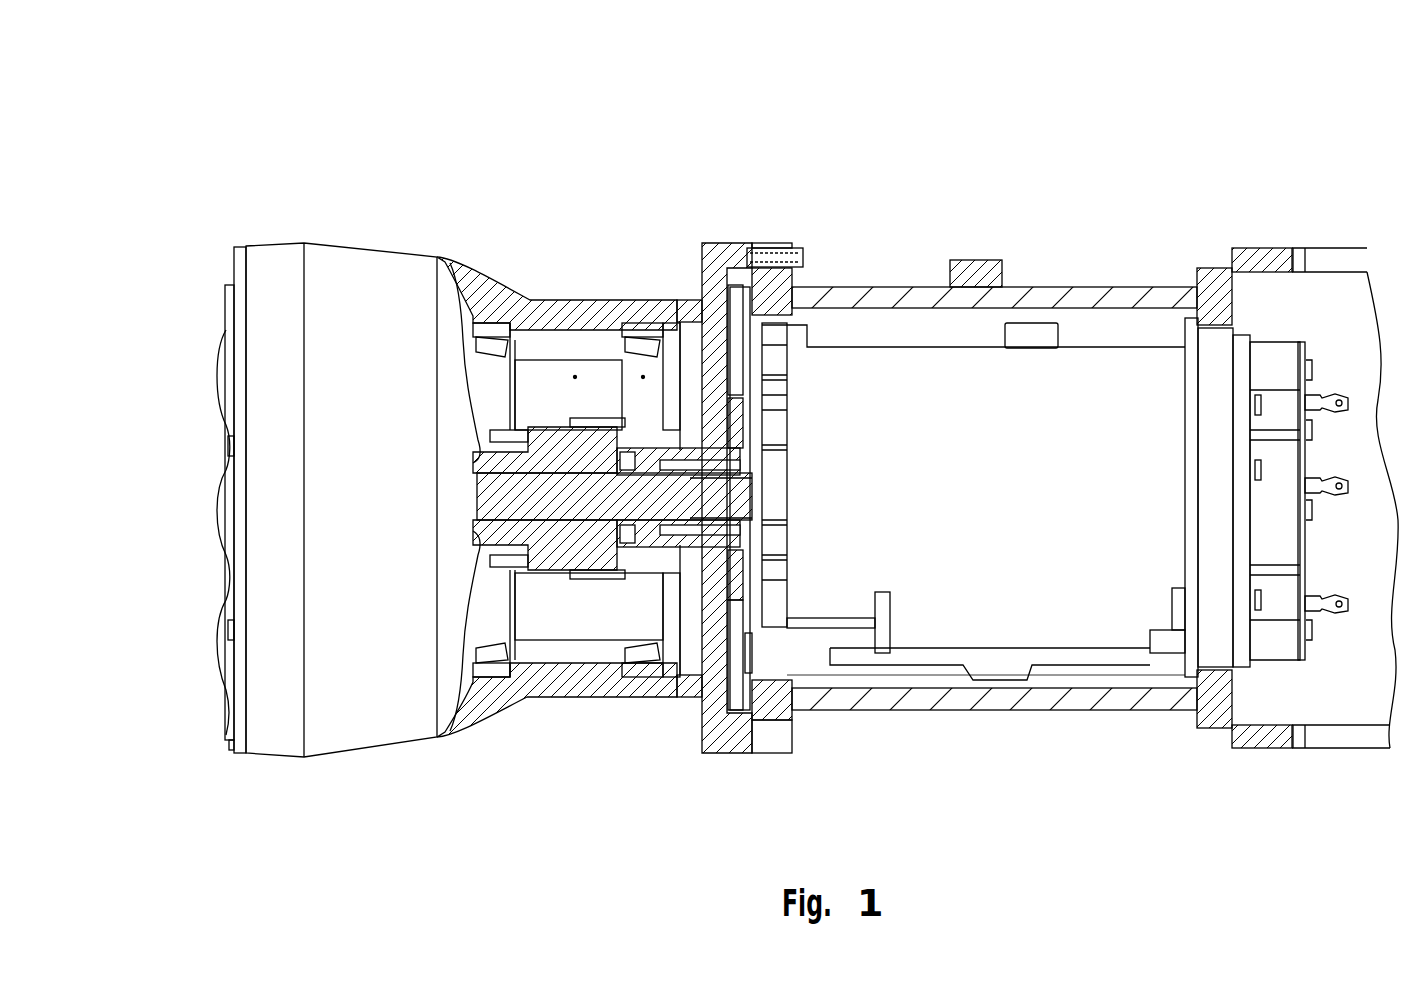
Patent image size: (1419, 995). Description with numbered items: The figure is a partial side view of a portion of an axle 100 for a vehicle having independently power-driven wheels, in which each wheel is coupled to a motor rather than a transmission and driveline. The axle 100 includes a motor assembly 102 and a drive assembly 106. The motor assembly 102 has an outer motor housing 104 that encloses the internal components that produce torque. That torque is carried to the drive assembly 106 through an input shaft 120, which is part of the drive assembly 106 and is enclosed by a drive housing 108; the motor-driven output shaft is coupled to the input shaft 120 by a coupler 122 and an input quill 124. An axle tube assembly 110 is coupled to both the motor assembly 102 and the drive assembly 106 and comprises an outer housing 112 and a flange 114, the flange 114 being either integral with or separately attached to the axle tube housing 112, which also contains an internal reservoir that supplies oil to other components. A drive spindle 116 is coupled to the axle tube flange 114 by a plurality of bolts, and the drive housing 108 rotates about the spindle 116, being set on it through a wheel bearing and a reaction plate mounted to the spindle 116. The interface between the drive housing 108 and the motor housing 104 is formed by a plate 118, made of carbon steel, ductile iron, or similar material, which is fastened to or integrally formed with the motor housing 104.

The axle 100 is at (247, 155).
The motor assembly 102 is at (1113, 375).
The outer motor housing 104 is at (1014, 500).
The drive assembly 106 is at (455, 257).
The drive housing 108 is at (367, 268).
The axle tube assembly 110 is at (1038, 268).
The outer housing 112 is at (932, 290).
The flange 114 is at (770, 248).
The drive spindle 116 is at (720, 250).
The plate 118 is at (752, 643).
The input shaft 120 is at (580, 507).
The coupler 122 is at (668, 450).
The input quill 124 is at (688, 548).